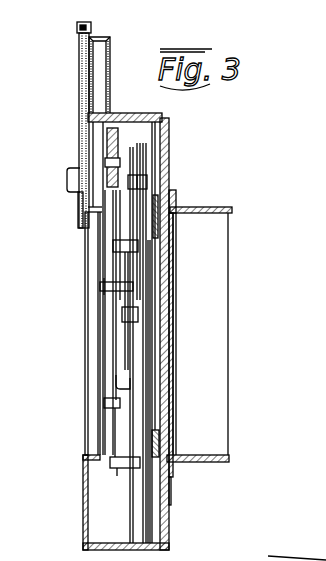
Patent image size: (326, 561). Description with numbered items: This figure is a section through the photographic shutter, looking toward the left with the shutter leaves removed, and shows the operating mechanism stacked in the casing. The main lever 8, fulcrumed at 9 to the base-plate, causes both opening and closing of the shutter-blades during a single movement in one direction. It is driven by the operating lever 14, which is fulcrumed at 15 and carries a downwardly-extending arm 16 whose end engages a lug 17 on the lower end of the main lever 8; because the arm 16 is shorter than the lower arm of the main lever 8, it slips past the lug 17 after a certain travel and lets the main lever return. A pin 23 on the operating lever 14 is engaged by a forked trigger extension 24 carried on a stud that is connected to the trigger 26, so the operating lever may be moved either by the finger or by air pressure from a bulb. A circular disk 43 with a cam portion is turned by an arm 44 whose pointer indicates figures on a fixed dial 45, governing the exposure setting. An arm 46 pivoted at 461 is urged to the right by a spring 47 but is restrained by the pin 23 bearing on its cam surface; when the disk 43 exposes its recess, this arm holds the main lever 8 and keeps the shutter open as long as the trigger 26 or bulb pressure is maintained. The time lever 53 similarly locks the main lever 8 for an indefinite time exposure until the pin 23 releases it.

The main lever 8 is at (130, 160).
The fulcrum of main lever 9 is at (125, 180).
The operating lever 14 is at (130, 343).
The fulcrum of operating lever 15 is at (130, 313).
The downwardly-extending arm 16 is at (130, 363).
The lug 17 is at (130, 388).
The pin 23 is at (100, 288).
The forked arm or trigger extension 24 is at (103, 253).
The trigger 26 is at (72, 178).
The circular disk 43 is at (113, 135).
The arm 44 is at (93, 26).
The fixed dial 45 is at (80, 82).
The arm 46 is at (100, 314).
The spring 47 is at (113, 437).
The time lever 53 is at (120, 247).
The pivot of arm 46 461 is at (120, 407).